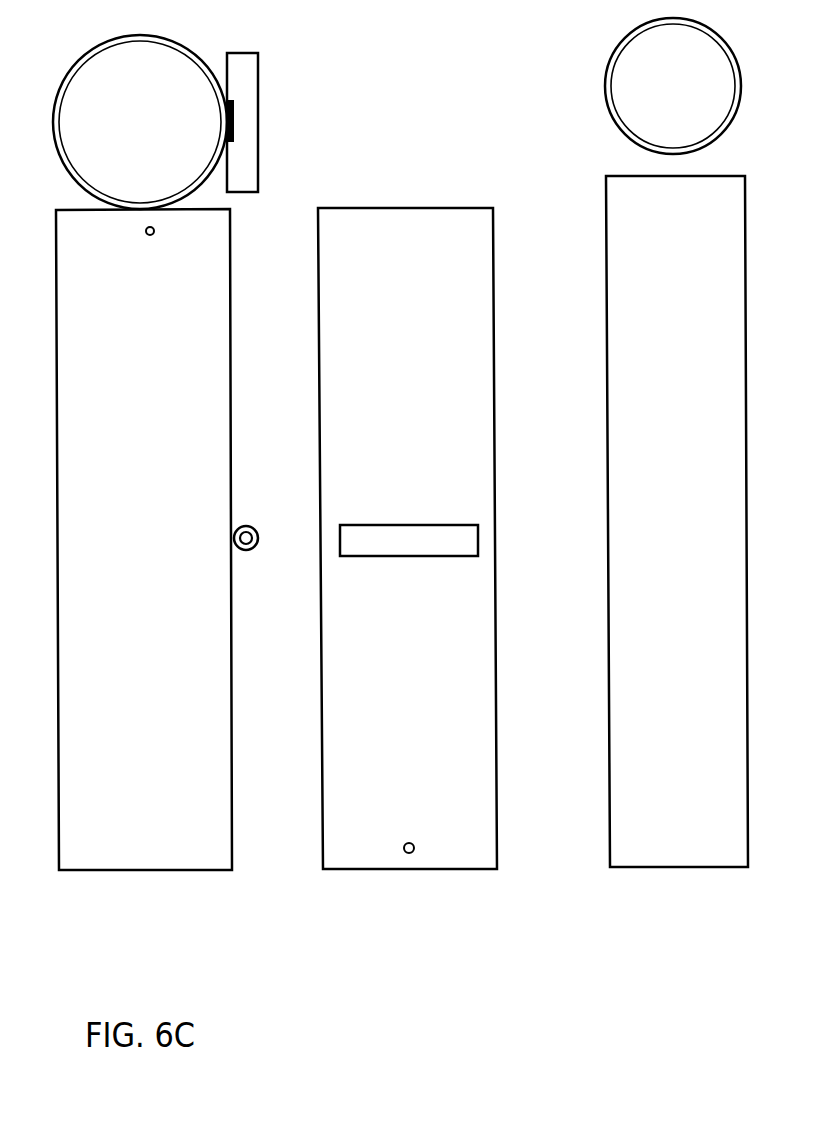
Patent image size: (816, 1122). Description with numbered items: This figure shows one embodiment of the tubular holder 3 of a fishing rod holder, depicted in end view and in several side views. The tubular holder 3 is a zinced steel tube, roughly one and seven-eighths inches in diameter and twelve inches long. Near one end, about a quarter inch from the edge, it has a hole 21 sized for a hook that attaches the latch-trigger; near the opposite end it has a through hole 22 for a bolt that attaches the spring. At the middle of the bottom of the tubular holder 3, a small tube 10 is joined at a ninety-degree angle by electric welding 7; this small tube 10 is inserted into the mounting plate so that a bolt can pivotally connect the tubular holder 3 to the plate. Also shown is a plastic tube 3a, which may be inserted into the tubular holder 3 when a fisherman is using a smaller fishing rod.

The tubular holder 3 is at (62, 160).
The plastic tube 3a is at (622, 125).
The electric welding 7 is at (223, 82).
The small tube 10 is at (253, 92).
The hole 21 is at (154, 228).
The through hole 22 is at (405, 855).